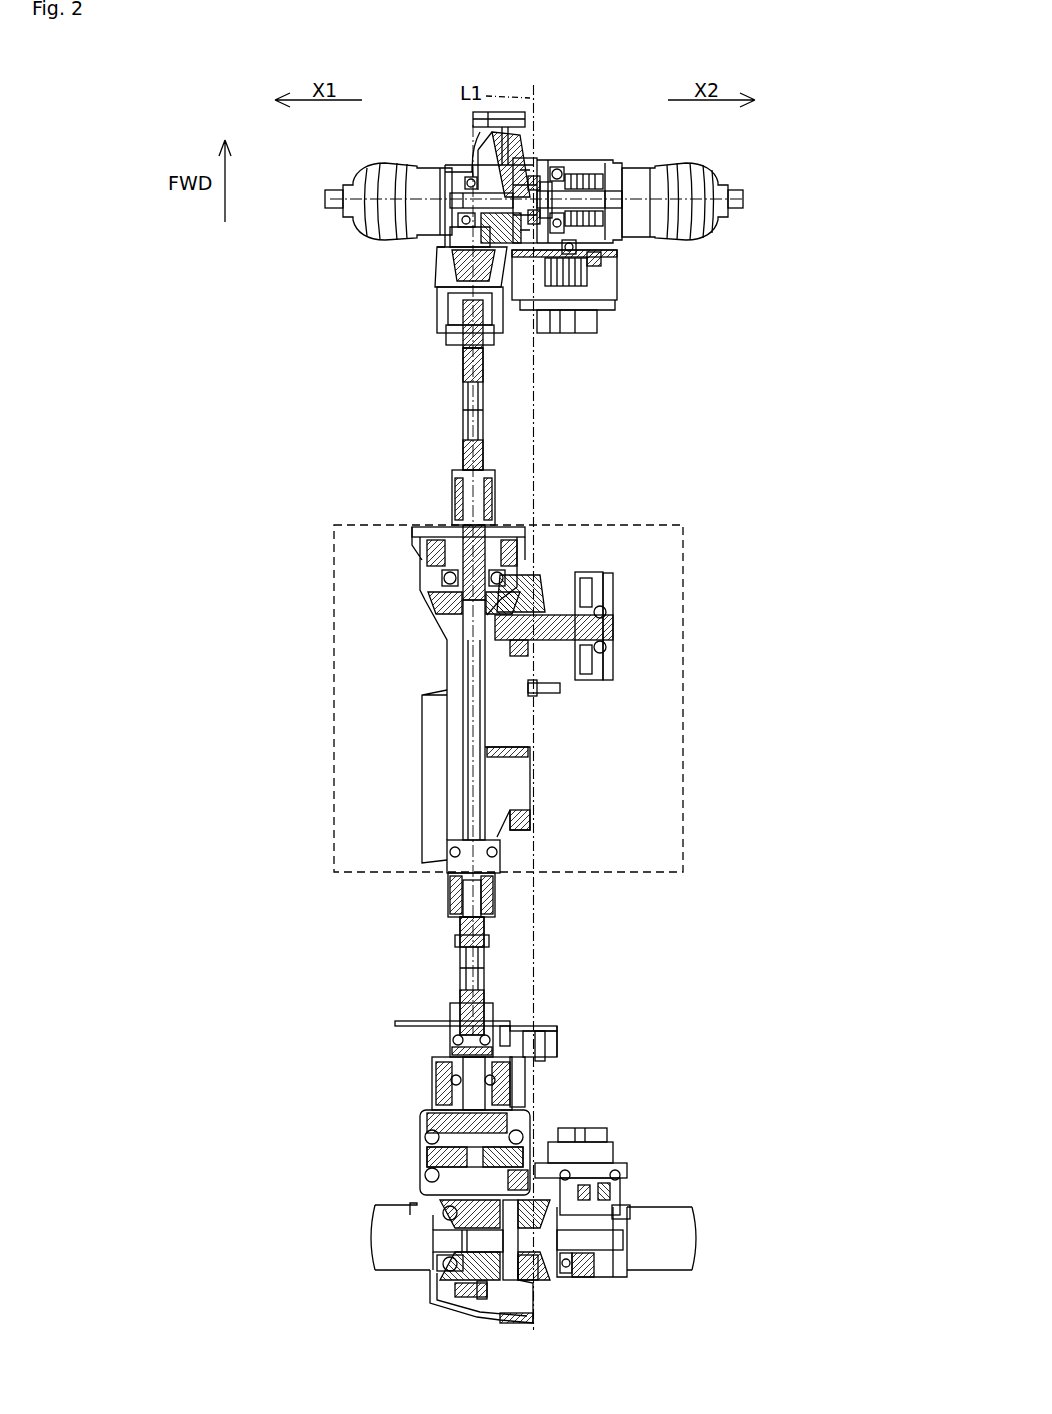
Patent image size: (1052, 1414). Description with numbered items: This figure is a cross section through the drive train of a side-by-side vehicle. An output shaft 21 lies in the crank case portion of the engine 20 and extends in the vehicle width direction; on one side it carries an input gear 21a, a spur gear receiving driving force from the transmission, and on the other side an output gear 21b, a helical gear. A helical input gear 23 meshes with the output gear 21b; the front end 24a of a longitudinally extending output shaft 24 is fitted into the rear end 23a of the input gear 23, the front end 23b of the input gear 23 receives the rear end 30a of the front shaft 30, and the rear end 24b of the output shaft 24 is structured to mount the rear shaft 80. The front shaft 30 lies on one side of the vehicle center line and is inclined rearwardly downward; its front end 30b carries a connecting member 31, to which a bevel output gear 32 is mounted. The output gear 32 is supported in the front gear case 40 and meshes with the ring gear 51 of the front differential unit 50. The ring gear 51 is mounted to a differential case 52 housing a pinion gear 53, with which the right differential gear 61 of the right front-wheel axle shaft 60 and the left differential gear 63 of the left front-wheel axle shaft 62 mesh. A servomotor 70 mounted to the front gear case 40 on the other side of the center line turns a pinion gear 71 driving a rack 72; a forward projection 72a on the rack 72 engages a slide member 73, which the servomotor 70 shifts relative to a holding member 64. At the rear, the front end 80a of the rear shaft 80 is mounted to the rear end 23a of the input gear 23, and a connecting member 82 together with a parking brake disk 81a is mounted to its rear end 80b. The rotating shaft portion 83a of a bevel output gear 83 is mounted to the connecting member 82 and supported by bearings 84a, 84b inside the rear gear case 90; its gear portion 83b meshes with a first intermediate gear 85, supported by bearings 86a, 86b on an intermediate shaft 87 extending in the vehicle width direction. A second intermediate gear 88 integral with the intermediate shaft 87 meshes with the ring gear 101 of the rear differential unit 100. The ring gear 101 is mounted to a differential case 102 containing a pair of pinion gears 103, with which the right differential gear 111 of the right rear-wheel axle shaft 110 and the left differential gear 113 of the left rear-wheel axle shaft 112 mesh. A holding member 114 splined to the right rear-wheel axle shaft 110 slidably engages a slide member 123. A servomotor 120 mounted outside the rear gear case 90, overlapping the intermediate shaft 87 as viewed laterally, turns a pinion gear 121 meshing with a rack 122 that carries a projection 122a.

The engine 20 is at (686, 536).
The output shaft 21 is at (560, 612).
The input gear 21a is at (600, 590).
The output gear 21b is at (525, 585).
The input gear 23 is at (425, 592).
The rear end of input gear 23a is at (462, 615).
The front end of input gear 23b is at (450, 520).
The output shaft 24 is at (470, 690).
The front end of output shaft 24a is at (487, 648).
The rear end of output shaft 24b is at (490, 882).
The front shaft 30 is at (468, 385).
The rear end of front shaft 30a is at (487, 506).
The front end of front shaft 30b is at (486, 350).
The connecting member 31 is at (445, 322).
The output gear 32 is at (437, 268).
The front gear case 40 is at (462, 194).
The front differential unit 50 is at (532, 168).
The ring gear 51 is at (490, 150).
The differential case 52 is at (537, 182).
The pinion gear 53 is at (548, 186).
The right front-wheel axle shaft 60 is at (610, 202).
The right differential gear 61 is at (557, 187).
The left front-wheel axle shaft 62 is at (455, 204).
The left differential gear 63 is at (471, 177).
The holding member 64 is at (622, 216).
The servomotor 70 is at (570, 292).
The pinion gear 71 is at (578, 270).
The rack 72 is at (588, 265).
The projection 72a is at (597, 254).
The slide member 73 is at (585, 190).
The rear shaft 80 is at (462, 946).
The front end of rear shaft 80a is at (490, 905).
The rear end of rear shaft 80b is at (480, 1005).
The parking brake disk 81a is at (535, 1022).
The connecting member 82 is at (452, 1030).
The output gear 83 is at (432, 1095).
The rotating shaft portion 83a is at (436, 1066).
The gear portion 83b is at (428, 1120).
The bearing 84a is at (525, 1056).
The bearing 84b is at (515, 1082).
The first intermediate gear 85 is at (512, 1108).
The bearing 86a is at (522, 1142).
The bearing 86b is at (430, 1172).
The intermediate shaft 87 is at (428, 1152).
The second intermediate gear 88 is at (428, 1130).
The rear gear case 90 is at (440, 1313).
The rear differential unit 100 is at (514, 1298).
The ring gear 101 is at (470, 1290).
The differential case 102 is at (520, 1285).
The pinion gears 103 is at (435, 1197).
The right rear-wheel axle shaft 110 is at (615, 1245).
The right differential gear 111 is at (562, 1270).
The left rear-wheel axle shaft 112 is at (465, 1240).
The left differential gear 113 is at (445, 1262).
The holding member 114 is at (583, 1260).
The servomotor 120 is at (606, 1150).
The pinion gear 121 is at (600, 1185).
The rack 122 is at (595, 1197).
The projection 122a is at (605, 1208).
The slide member 123 is at (628, 1212).